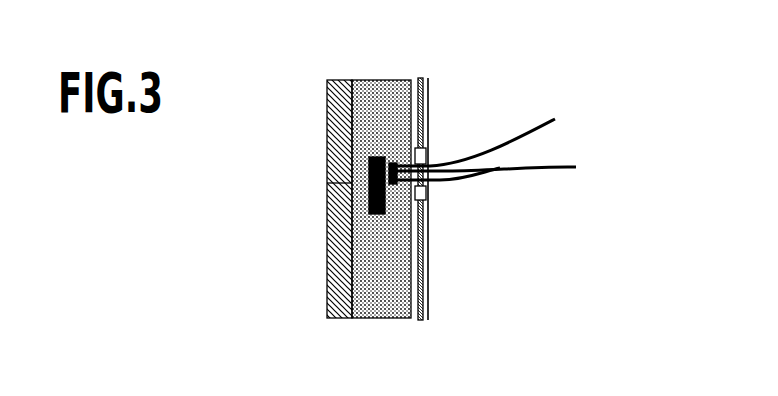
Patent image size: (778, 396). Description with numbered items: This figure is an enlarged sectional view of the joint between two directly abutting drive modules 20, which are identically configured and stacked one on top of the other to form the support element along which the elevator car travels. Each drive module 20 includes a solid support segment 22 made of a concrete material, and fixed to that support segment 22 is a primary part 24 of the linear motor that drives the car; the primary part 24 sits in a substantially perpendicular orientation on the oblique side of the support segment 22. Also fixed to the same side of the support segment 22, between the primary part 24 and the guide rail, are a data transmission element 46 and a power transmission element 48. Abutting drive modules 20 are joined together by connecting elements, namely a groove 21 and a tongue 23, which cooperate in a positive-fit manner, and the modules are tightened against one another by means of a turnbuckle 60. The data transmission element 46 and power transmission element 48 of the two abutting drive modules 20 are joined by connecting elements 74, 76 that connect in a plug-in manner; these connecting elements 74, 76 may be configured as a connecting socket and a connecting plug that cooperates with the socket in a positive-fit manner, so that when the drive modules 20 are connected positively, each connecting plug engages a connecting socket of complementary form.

The drive module 20 is at (348, 72).
The support segment 22 is at (377, 90).
The primary part 24 is at (333, 128).
The data transmission element 46 is at (421, 98).
The power transmission element 48 is at (428, 98).
The turnbuckle 60 is at (350, 201).
The connecting element 74 is at (421, 160).
The connecting element 76 is at (421, 197).
The groove 21 is at (578, 133).
The tongue 23 is at (595, 151).